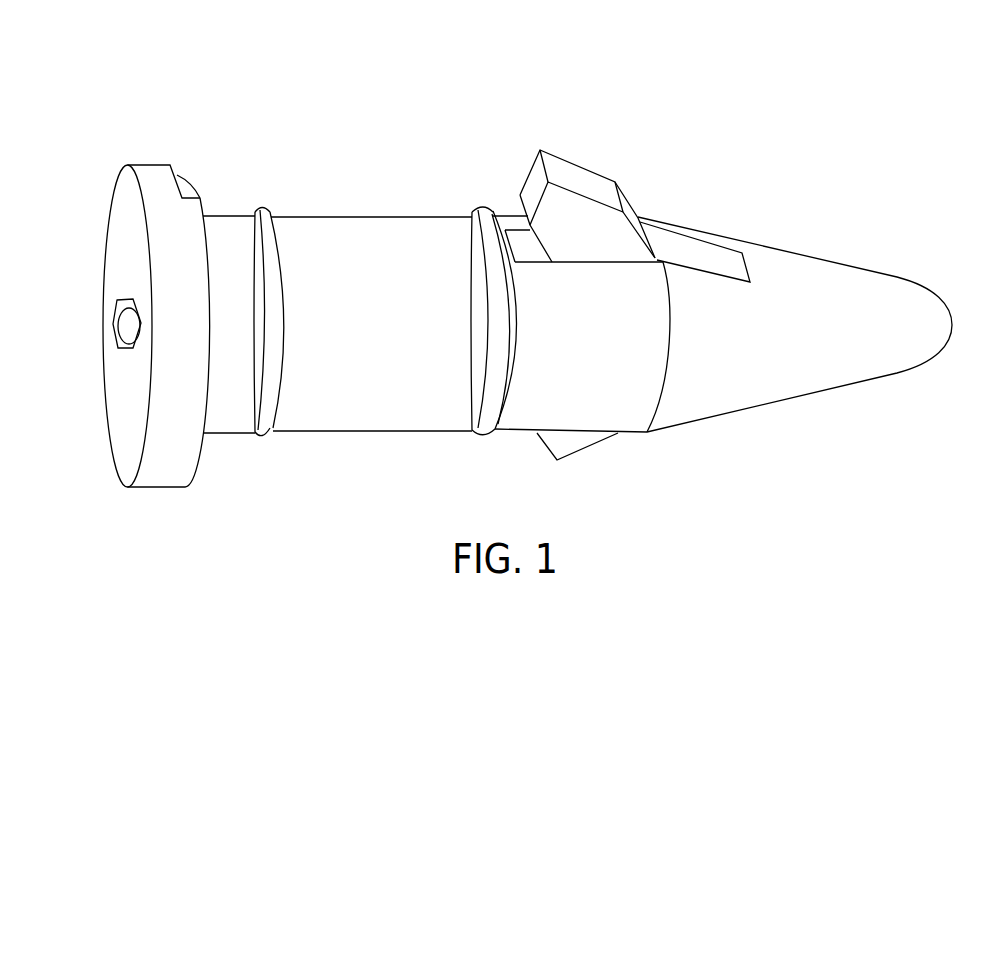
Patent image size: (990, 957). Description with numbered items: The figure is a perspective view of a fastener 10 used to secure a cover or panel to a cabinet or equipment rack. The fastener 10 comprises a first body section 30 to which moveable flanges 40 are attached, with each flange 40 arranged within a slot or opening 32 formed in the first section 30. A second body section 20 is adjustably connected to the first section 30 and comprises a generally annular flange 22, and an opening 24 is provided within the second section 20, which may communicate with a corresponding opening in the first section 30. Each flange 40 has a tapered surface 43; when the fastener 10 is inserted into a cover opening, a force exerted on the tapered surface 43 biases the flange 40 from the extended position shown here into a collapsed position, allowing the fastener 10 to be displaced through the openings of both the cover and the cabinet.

The fastener 10 is at (443, 92).
The second body section 20 is at (224, 238).
The annular flange 22 is at (162, 467).
The opening 24 is at (125, 327).
The first body section 30 is at (795, 275).
The slots or openings 32 is at (695, 252).
The moveable flange 40 is at (571, 170).
The tapered surface 43 is at (641, 225).